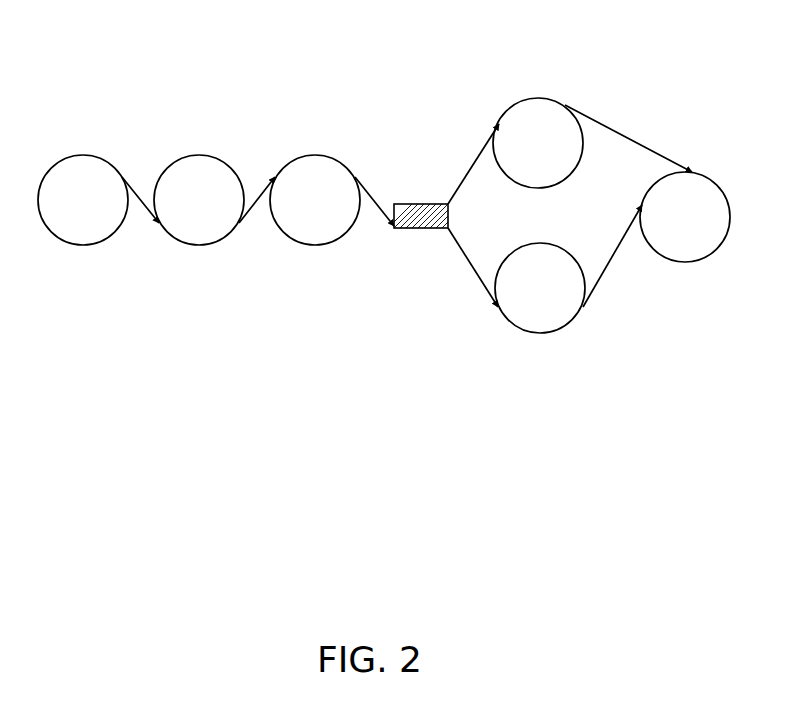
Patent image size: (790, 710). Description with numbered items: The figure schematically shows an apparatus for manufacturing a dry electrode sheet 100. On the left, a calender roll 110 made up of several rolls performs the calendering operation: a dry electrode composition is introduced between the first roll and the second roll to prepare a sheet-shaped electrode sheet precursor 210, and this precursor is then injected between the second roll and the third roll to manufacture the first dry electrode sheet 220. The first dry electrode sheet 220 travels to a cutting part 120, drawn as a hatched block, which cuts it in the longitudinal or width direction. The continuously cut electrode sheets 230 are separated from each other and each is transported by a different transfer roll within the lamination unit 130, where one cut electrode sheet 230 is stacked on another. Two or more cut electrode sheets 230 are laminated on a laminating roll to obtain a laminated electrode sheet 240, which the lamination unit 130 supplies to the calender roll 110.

The apparatus for manufacturing a dry electrode sheet 100 is at (110, 62).
The calender roll 110 is at (216, 250).
The cutting part 120 is at (415, 228).
The lamination unit 130 is at (568, 221).
The electrode sheet precursor 210 is at (201, 246).
The first dry electrode sheet 220 is at (314, 154).
The cut electrode sheet 230 is at (539, 97).
The laminated electrode sheet 240 is at (707, 174).